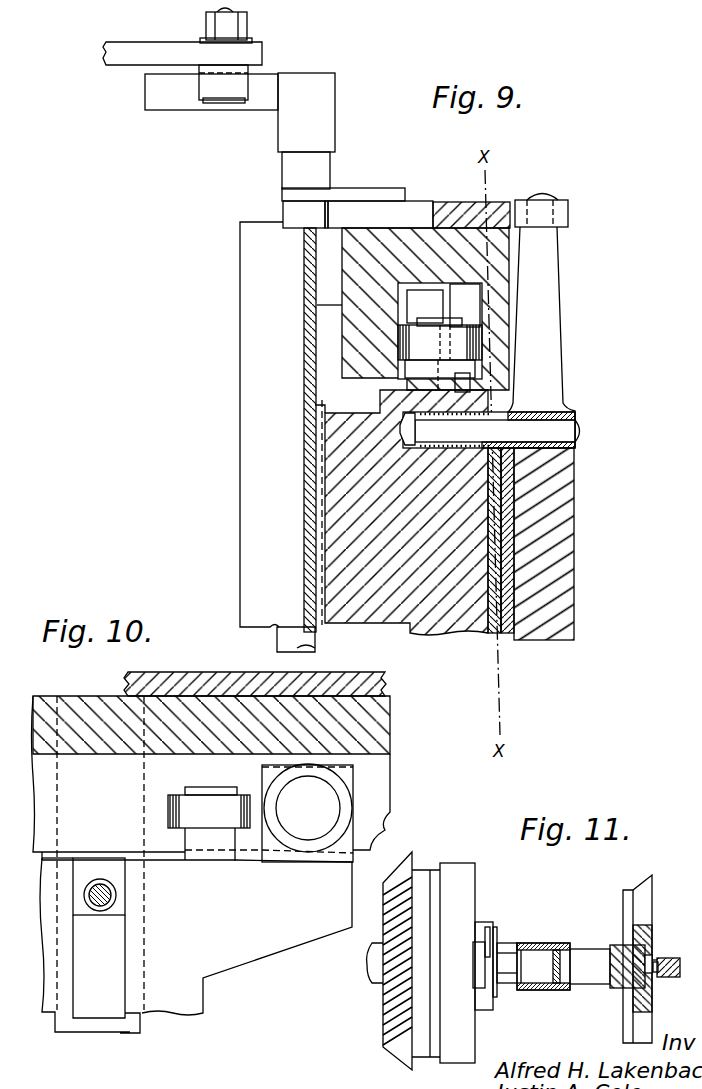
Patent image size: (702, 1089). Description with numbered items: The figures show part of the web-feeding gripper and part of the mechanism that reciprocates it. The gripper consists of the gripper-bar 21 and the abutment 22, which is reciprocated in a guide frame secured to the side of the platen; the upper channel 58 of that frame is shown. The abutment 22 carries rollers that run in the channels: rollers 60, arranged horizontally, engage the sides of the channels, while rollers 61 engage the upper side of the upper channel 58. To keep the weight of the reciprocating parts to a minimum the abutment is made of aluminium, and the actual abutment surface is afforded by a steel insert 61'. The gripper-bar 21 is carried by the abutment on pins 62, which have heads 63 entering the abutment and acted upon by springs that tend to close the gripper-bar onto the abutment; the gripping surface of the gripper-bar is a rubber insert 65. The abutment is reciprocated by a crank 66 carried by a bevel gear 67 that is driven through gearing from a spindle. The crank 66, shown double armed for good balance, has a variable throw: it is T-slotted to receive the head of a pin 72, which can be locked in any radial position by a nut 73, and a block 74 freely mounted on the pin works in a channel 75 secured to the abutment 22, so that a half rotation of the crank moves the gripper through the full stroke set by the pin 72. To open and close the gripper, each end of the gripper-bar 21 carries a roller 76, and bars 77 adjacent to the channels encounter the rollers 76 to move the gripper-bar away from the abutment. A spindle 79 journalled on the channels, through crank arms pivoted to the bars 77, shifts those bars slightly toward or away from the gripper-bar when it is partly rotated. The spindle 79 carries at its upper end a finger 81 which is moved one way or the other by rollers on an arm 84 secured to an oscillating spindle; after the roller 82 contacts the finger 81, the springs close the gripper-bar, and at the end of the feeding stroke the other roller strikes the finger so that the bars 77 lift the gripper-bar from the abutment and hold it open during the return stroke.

In FIG. 9, the gripper-bar 21 is at (552, 626).
In FIG. 11, the gripper-bar 21 is at (674, 978).
In FIG. 9, the abutment 22 is at (410, 632).
In FIG. 10, the abutment 22 is at (198, 997).
In FIG. 11, the abutment 22 is at (617, 993).
In FIG. 9, the upper channel 58 is at (352, 273).
In FIG. 10, the upper channel 58 is at (83, 708).
In FIG. 9, the rollers 60 is at (405, 340).
In FIG. 10, the rollers 60 is at (180, 808).
In FIG. 9, the rollers 61 is at (443, 277).
In FIG. 10, the rollers 61 is at (307, 832).
In FIG. 9, the steel insert 61' is at (473, 560).
In FIG. 10, the steel insert 61' is at (116, 945).
In FIG. 11, the steel insert 61' is at (615, 959).
In FIG. 9, the pins 62 is at (417, 448).
In FIG. 10, the pins 62 is at (112, 893).
In FIG. 9, the heads 63 is at (413, 427).
In FIG. 9, the rubber insert 65 is at (503, 641).
In FIG. 11, the rubber insert 65 is at (660, 957).
In FIG. 11, the crank 66 is at (483, 1005).
In FIG. 11, the bevel gear 67 is at (384, 1032).
In FIG. 11, the pin 72 is at (490, 930).
In FIG. 11, the nut 73 is at (507, 945).
In FIG. 11, the block 74 is at (538, 975).
In FIG. 9, the channel 75 is at (247, 578).
In FIG. 10, the channel 75 is at (58, 1020).
In FIG. 11, the channel 75 is at (556, 990).
In FIG. 9, the roller 76 is at (519, 210).
In FIG. 9, the bars 77 is at (470, 207).
In FIG. 10, the bars 77 is at (384, 704).
In FIG. 9, the spindle 79 is at (293, 207).
In FIG. 9, the finger 81 is at (158, 103).
In FIG. 9, the roller 82 is at (213, 88).
In FIG. 9, the arm 84 is at (133, 58).